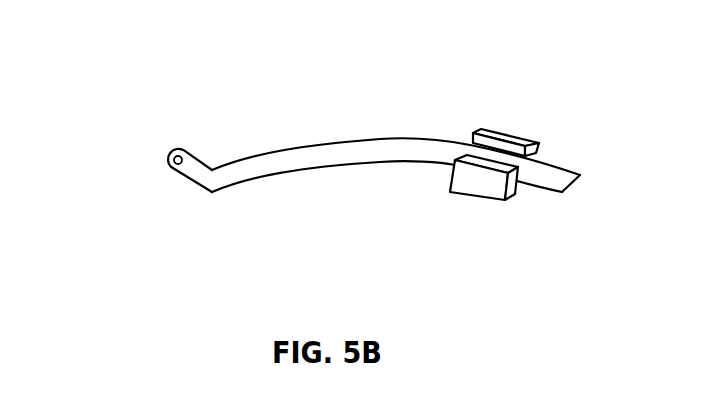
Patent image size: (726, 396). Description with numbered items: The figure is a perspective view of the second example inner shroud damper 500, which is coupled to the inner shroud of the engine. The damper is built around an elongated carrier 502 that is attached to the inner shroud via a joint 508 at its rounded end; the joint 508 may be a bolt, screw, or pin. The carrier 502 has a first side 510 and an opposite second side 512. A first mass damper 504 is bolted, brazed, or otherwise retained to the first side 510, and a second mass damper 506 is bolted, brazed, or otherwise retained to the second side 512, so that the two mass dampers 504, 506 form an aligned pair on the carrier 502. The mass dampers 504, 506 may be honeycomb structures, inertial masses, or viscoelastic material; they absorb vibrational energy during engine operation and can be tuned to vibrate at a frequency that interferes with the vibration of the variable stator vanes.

The inner shroud damper 500 is at (136, 57).
The carrier 502 is at (186, 146).
The first mass damper 504 is at (488, 128).
The second mass damper 506 is at (468, 198).
The joint 508 is at (170, 164).
The first side 510 is at (565, 165).
The second side 512 is at (556, 181).